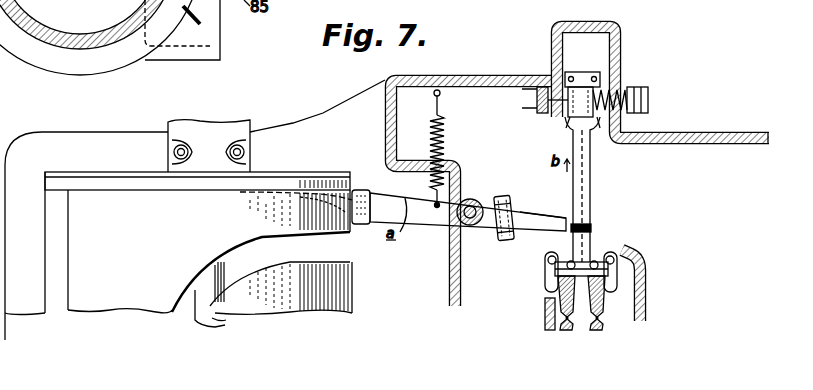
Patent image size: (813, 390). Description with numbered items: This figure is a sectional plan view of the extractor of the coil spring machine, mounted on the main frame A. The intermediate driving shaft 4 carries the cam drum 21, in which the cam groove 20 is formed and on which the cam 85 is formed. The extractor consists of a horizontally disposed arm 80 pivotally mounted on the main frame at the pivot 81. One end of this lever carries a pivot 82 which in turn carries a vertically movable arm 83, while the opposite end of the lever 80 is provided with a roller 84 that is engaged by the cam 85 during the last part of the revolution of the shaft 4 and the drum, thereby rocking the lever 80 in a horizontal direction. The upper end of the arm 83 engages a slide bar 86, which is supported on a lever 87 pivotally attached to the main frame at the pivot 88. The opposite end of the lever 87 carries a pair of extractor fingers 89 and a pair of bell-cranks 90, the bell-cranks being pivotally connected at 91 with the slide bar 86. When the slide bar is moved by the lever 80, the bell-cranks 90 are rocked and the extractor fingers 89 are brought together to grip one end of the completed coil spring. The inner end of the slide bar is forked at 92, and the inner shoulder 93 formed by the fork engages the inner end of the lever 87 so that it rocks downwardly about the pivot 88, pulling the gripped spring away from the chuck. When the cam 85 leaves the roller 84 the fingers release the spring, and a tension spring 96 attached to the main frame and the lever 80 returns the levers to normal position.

The intermediate driving shaft 4 is at (196, 312).
The cam groove 20 is at (360, 262).
The cam drum 21 is at (210, 252).
The horizontally disposed arm 80 is at (437, 232).
The pivot 81 is at (475, 199).
The pivot 82 is at (516, 177).
The vertically movable arm 83 is at (523, 215).
The roller 84 is at (362, 228).
The cam 85 is at (337, 172).
The slide bar 86 is at (591, 184).
The lever 87 is at (592, 202).
The main frame pivot 88 is at (538, 102).
The extractor fingers 89 is at (567, 332).
The bell-cranks 90 is at (546, 284).
The pivotal connection 91 is at (612, 244).
The fork 92 is at (567, 128).
The inner shoulder 93 is at (595, 135).
The tension spring 96 is at (440, 142).
The main frame A is at (693, 135).